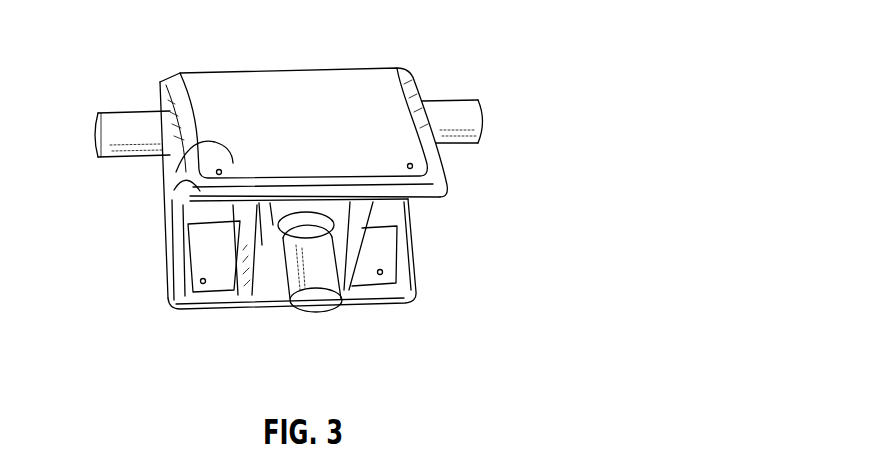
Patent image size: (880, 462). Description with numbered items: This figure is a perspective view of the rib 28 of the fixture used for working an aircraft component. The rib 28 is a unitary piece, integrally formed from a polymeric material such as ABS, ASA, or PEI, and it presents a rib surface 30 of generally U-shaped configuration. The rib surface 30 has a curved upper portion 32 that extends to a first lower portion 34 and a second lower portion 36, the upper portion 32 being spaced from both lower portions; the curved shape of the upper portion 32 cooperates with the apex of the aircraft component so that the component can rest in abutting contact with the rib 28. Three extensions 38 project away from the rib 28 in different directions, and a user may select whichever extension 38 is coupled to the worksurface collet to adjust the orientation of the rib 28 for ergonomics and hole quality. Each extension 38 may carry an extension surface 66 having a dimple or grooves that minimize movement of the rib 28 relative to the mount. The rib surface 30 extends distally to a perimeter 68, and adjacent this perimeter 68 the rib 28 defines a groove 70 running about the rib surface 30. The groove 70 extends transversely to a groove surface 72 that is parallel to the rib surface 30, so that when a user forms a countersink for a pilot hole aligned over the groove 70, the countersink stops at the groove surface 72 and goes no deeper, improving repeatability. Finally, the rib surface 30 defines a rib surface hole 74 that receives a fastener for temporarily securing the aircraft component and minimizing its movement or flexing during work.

The rib 28 is at (444, 32).
The rib surface 30 is at (344, 83).
The upper portion 32 is at (298, 66).
The first lower portion 34 is at (322, 198).
The second lower portion 36 is at (248, 311).
The extension 38 is at (99, 143).
The extension surface 66 is at (143, 122).
The perimeter 68 is at (419, 146).
The groove 70 is at (425, 184).
The groove surface 72 is at (177, 175).
The rib surface hole 74 is at (190, 150).